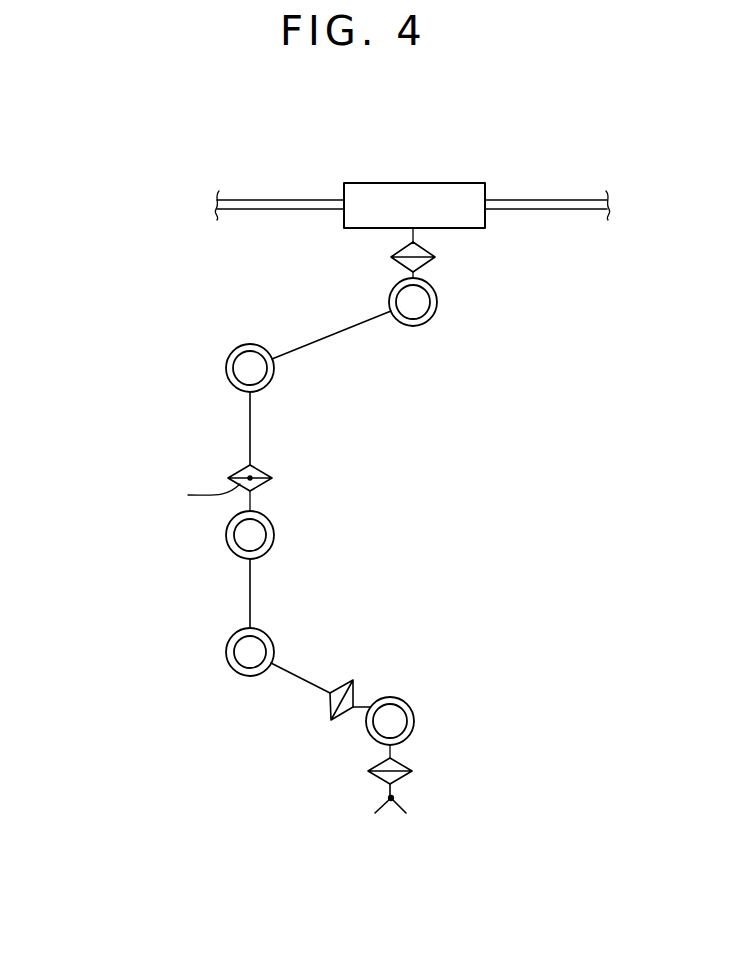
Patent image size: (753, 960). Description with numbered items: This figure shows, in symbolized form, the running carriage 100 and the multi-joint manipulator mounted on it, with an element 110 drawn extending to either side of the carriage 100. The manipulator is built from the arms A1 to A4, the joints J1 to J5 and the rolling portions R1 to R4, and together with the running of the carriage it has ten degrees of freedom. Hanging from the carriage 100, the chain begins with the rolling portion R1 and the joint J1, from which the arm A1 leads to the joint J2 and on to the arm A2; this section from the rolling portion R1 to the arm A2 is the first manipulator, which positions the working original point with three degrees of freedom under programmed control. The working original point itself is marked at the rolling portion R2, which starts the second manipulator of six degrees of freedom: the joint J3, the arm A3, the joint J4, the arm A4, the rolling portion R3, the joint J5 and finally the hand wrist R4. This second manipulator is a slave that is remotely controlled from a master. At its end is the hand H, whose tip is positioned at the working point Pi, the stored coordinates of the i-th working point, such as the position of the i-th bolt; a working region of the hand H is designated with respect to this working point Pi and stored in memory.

The running carriage 100 is at (445, 183).
The guide rail 110 is at (560, 200).
The rolling portion R1 is at (436, 257).
The joint J1 is at (431, 319).
The arm A1 is at (342, 330).
The joint J2 is at (226, 368).
The arm A2 is at (252, 424).
The rolling portion R2 is at (273, 478).
The joint J3 is at (275, 540).
The arm A3 is at (249, 600).
The joint J4 is at (275, 646).
The arm A4 is at (291, 681).
The rolling portion R3 is at (353, 680).
The joint J5 is at (412, 708).
The hand wrist R4 is at (413, 771).
The hand H is at (390, 808).
The working point Pi is at (394, 798).